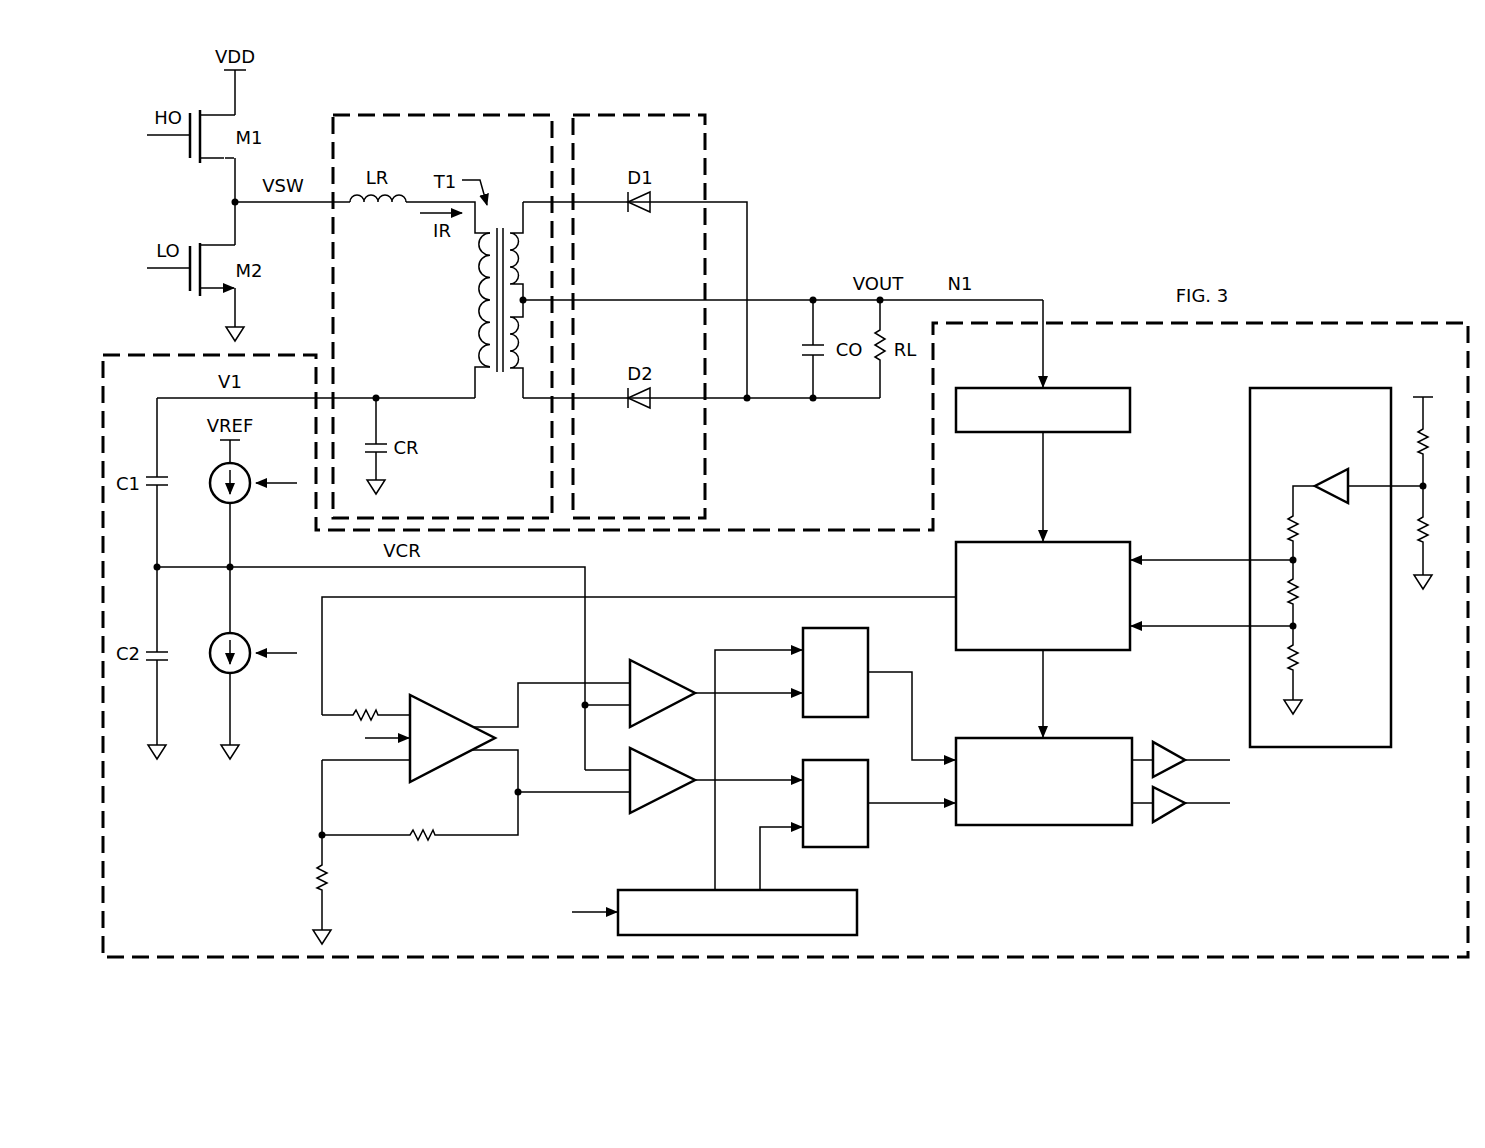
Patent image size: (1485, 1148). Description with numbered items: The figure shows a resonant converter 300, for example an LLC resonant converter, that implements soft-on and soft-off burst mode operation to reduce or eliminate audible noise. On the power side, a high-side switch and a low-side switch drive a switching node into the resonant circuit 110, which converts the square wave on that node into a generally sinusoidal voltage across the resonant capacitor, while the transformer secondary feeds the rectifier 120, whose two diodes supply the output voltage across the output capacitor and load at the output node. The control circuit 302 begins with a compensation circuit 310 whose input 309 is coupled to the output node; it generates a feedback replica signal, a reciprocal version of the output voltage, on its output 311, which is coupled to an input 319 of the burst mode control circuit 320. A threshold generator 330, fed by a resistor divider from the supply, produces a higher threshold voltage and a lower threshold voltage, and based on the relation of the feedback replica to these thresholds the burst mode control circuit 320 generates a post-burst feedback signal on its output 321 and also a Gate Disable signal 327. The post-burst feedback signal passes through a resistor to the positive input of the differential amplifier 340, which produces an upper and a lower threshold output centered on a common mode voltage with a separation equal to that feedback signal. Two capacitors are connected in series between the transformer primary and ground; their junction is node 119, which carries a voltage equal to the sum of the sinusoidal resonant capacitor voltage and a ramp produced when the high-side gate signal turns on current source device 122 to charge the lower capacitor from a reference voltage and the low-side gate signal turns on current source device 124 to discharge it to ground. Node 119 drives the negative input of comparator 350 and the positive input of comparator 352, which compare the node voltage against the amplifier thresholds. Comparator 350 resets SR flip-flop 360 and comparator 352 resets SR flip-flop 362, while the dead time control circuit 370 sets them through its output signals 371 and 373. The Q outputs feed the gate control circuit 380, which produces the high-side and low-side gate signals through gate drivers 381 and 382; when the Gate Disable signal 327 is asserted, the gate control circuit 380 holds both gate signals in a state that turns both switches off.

The resonant circuit 110 is at (414, 110).
The rectifier 120 is at (597, 110).
The resonant converter 300 is at (1092, 204).
The control circuit 302 is at (1352, 363).
The input of compensation circuit 309 is at (1040, 368).
The compensation circuit 310 is at (1130, 410).
The output of compensation circuit 311 is at (1040, 438).
The input of burst mode control circuit 319 is at (1040, 530).
The burst mode control circuit 320 is at (1025, 642).
The output of burst mode control circuit 321 is at (948, 600).
The Gate Disable signal 327 is at (1040, 695).
The threshold generator 330 is at (1327, 750).
The differential amplifier 340 is at (458, 714).
The comparator 350 is at (668, 673).
The comparator 352 is at (668, 761).
The SR flip-flop 360 is at (800, 640).
The SR flip-flop 362 is at (868, 815).
The dead time control circuit 370 is at (857, 928).
The output signal 371 is at (712, 856).
The output signal 373 is at (762, 856).
The gate control circuit 380 is at (1052, 826).
The gate driver 381 is at (1170, 820).
The gate driver 382 is at (1170, 745).
The node 119 is at (155, 571).
The current source device 122 is at (223, 507).
The current source device 124 is at (223, 677).